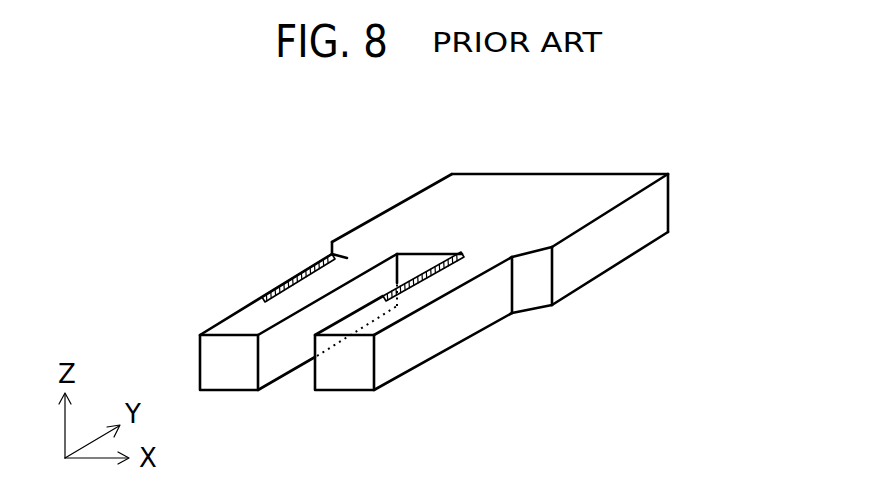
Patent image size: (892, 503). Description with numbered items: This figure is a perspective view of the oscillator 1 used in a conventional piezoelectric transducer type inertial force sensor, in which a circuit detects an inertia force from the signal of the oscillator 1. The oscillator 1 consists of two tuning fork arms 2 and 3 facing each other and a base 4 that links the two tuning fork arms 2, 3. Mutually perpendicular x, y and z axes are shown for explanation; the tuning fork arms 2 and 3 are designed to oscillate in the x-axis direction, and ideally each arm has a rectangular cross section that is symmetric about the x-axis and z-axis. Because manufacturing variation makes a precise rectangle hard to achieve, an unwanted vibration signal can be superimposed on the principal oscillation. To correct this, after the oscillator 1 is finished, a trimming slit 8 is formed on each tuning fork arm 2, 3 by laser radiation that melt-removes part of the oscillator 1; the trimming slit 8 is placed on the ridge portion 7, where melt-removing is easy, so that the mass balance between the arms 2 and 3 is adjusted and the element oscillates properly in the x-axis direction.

The oscillator 1 is at (558, 167).
The tuning fork arm 2 is at (230, 377).
The tuning fork arm 3 is at (345, 377).
The base 4 is at (450, 198).
The ridge portion 7 is at (228, 312).
The trimming slit 8 is at (397, 283).